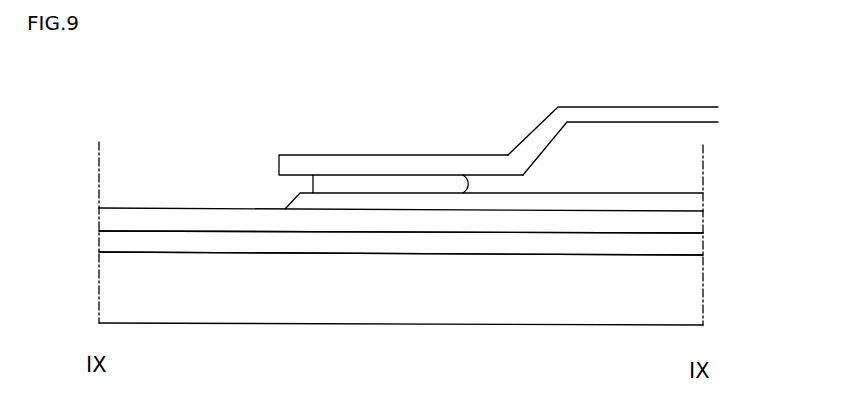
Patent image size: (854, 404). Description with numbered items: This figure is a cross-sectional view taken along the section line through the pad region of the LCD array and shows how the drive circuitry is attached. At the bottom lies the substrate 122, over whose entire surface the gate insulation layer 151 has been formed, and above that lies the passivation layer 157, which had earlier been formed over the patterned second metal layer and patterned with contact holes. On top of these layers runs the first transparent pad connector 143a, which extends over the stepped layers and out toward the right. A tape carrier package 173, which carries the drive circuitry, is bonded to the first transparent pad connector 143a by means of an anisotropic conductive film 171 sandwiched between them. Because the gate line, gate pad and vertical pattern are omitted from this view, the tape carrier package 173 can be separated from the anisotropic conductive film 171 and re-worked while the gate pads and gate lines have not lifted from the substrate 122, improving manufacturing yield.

The substrate 122 is at (412, 299).
The gate insulation layer 151 is at (698, 247).
The passivation layer 157 is at (690, 223).
The anisotropic conductive film 171 is at (330, 183).
The tape carrier package 173 is at (340, 160).
The first transparent pad connector 143a is at (492, 202).